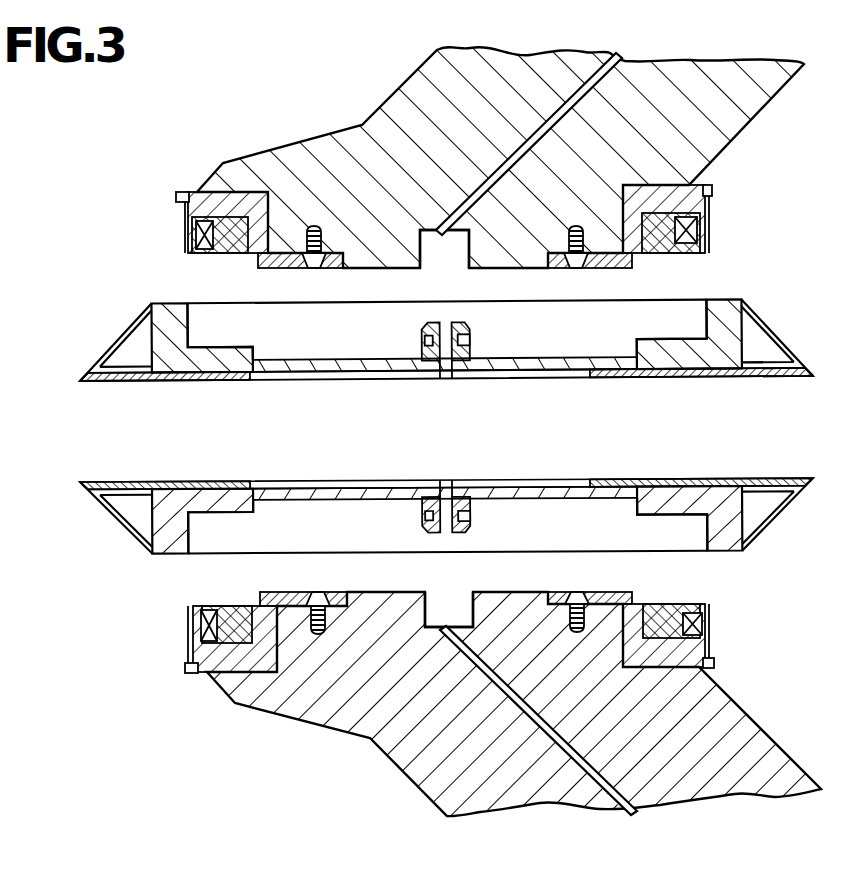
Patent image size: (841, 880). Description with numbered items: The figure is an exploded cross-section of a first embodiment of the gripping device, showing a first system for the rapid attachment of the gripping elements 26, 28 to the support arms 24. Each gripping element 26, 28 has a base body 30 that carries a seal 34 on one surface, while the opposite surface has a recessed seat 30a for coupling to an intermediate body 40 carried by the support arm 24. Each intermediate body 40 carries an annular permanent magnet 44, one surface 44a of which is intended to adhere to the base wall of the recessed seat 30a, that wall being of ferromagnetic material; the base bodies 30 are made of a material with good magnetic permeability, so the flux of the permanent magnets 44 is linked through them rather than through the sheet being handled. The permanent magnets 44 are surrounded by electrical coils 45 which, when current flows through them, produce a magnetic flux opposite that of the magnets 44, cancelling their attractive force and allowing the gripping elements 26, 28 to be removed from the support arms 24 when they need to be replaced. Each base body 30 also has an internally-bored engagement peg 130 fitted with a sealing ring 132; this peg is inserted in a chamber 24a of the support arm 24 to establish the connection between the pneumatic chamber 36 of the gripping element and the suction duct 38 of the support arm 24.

The support arm 24 is at (752, 100).
The chamber of the support arm 24a is at (430, 250).
The gripping element 26 is at (100, 332).
The gripping element 28 is at (98, 538).
The base body 30 is at (606, 346).
The recessed seat 30a is at (218, 346).
The seal 34 is at (208, 381).
The pneumatic chamber 36 is at (387, 376).
The suction duct 38 is at (483, 182).
The intermediate body 40 is at (195, 192).
The annular permanent magnet 44 is at (228, 255).
The surface of the permanent magnet 44a is at (196, 256).
The electrical coil 45 is at (190, 236).
The engagement peg 130 is at (458, 325).
The sealing ring 132 is at (466, 343).